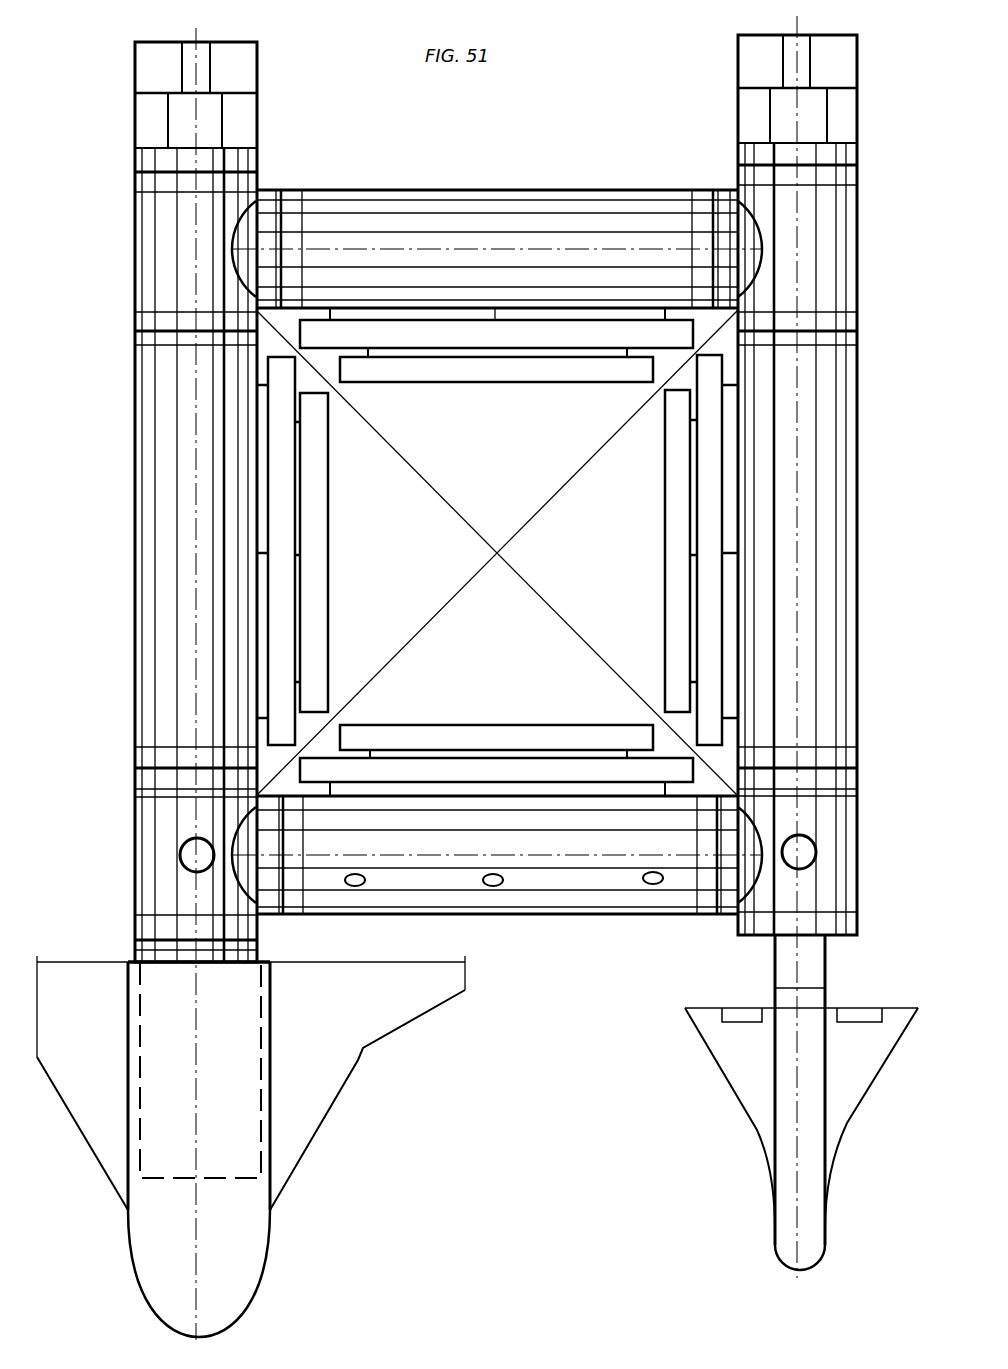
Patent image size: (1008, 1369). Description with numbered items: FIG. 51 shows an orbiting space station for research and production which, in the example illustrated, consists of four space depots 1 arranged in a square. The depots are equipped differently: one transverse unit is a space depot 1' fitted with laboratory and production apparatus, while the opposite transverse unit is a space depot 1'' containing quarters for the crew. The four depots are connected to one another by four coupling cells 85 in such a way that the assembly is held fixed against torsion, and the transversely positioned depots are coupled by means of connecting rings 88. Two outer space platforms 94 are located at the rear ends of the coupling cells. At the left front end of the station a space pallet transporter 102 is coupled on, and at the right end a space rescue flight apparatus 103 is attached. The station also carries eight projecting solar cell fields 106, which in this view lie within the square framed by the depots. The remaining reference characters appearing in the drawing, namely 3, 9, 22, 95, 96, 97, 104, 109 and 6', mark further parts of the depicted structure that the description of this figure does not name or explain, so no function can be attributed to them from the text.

The space depot 1 is at (491, 678).
The space depot with laboratory and production apparatus 1' is at (497, 227).
The space depot with quarters for the crew 1'' is at (497, 874).
The thin connecting band 3 is at (702, 205).
The thick connecting band 9 is at (712, 197).
The cap section 22 is at (807, 65).
The coupling cell 85 is at (820, 228).
The connecting ring 88 is at (743, 258).
The outer space platform 94 is at (232, 85).
The side block 95 is at (813, 108).
The intermediate block 96 is at (750, 112).
The cap block 97 is at (750, 63).
The space pallet transporter 102 is at (298, 1117).
The space rescue flight apparatus 103 is at (807, 1205).
The pivot hole 104 is at (805, 853).
The solar cell field 106 is at (686, 602).
The opening 109 is at (653, 887).
The float hull core 6' is at (244, 1071).